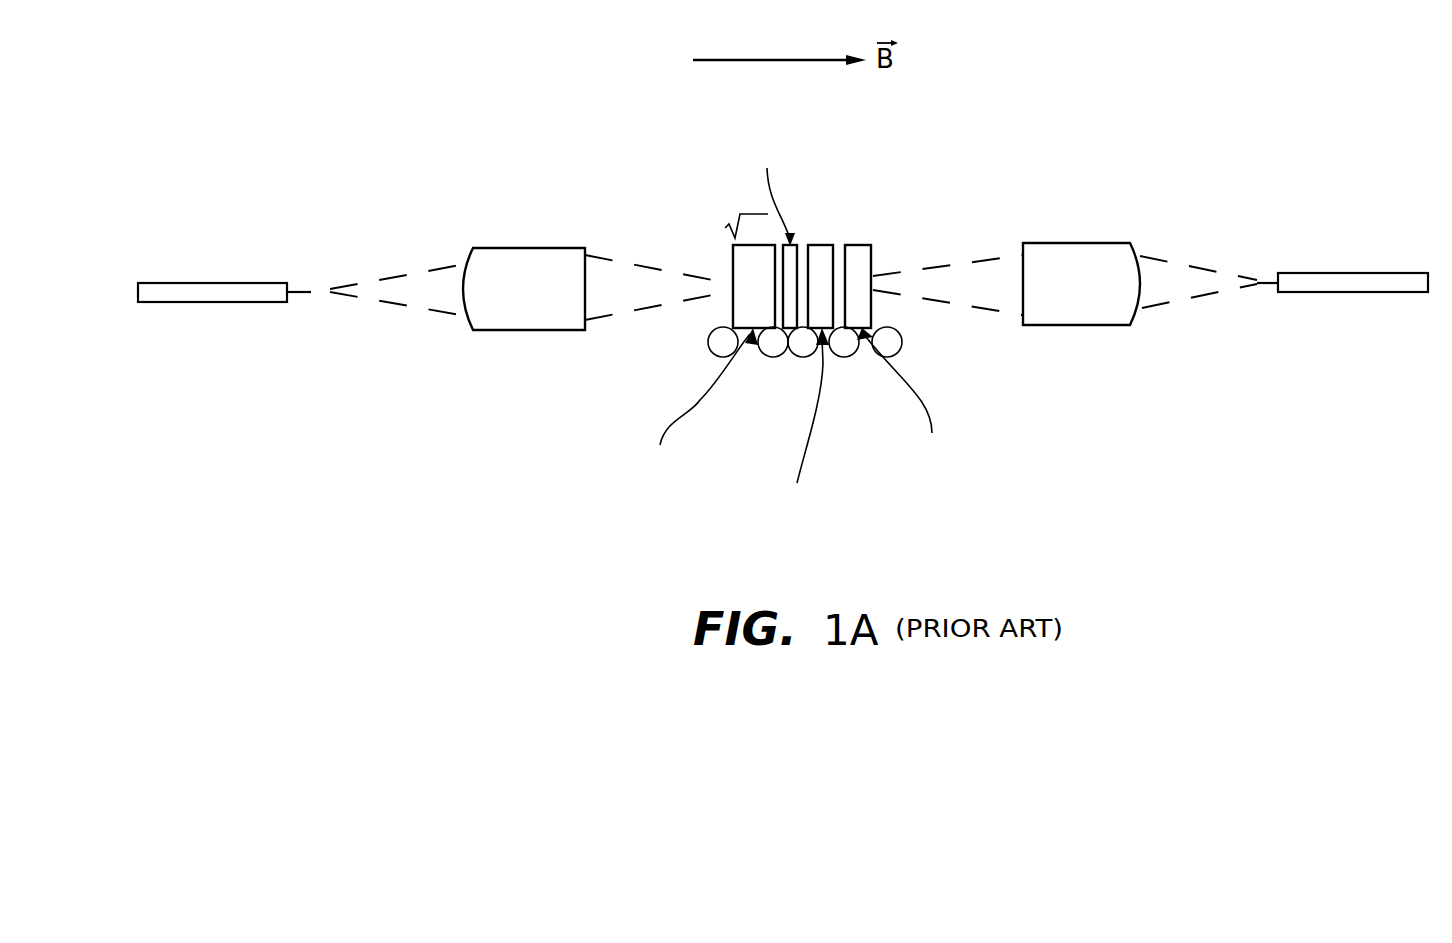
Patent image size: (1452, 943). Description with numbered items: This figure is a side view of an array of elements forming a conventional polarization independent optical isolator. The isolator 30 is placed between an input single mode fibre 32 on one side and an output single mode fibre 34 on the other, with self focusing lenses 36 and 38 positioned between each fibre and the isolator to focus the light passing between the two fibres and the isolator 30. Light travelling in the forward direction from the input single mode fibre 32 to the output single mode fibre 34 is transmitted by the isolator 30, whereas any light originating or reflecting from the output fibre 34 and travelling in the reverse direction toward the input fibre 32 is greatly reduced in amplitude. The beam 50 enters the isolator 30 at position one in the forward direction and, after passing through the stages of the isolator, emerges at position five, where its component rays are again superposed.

The isolator 30 is at (717, 208).
The input single mode fibre 32 is at (203, 302).
The output single mode fibre 34 is at (1371, 292).
The self focusing lens 36 is at (528, 248).
The self focusing lens 38 is at (1057, 243).
The beam 50 is at (647, 263).